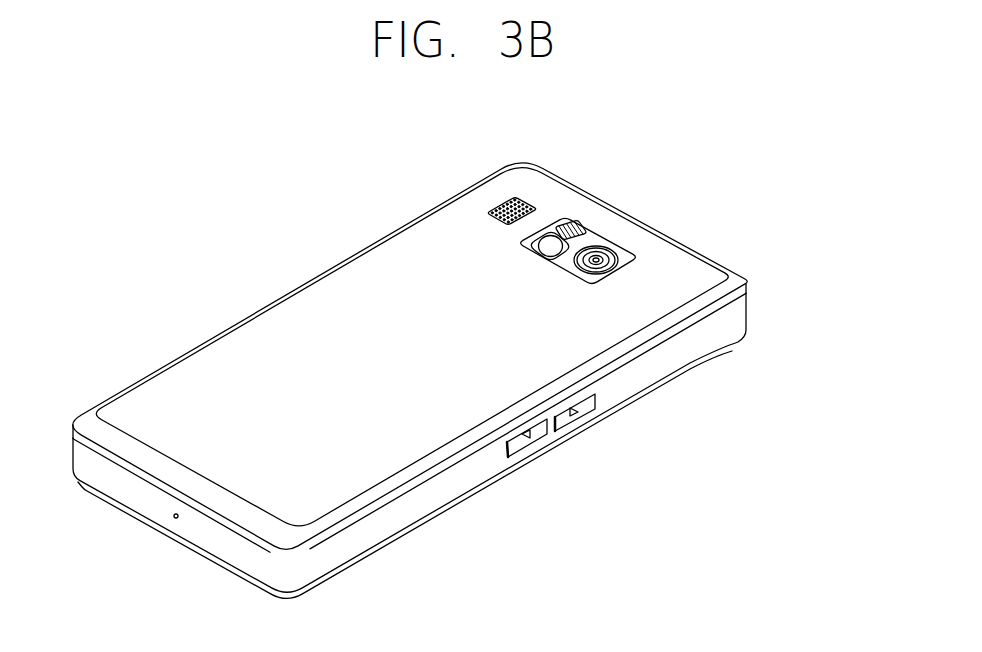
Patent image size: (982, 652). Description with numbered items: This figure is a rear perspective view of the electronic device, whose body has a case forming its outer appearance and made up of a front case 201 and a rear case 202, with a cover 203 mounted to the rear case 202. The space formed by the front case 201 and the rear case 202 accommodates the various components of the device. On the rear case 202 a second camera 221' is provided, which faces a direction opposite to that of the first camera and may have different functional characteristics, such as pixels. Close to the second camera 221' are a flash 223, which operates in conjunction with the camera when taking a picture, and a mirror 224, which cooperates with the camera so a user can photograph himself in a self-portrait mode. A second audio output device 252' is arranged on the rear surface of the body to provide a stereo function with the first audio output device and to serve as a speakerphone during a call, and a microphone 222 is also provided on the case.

The front case 201 is at (733, 347).
The rear case 202 is at (738, 315).
The cover 203 is at (736, 285).
The second camera 221' is at (592, 202).
The microphone 222 is at (173, 519).
The flash 223 is at (577, 227).
The mirror 224 is at (548, 240).
The second audio output device 252' is at (494, 180).